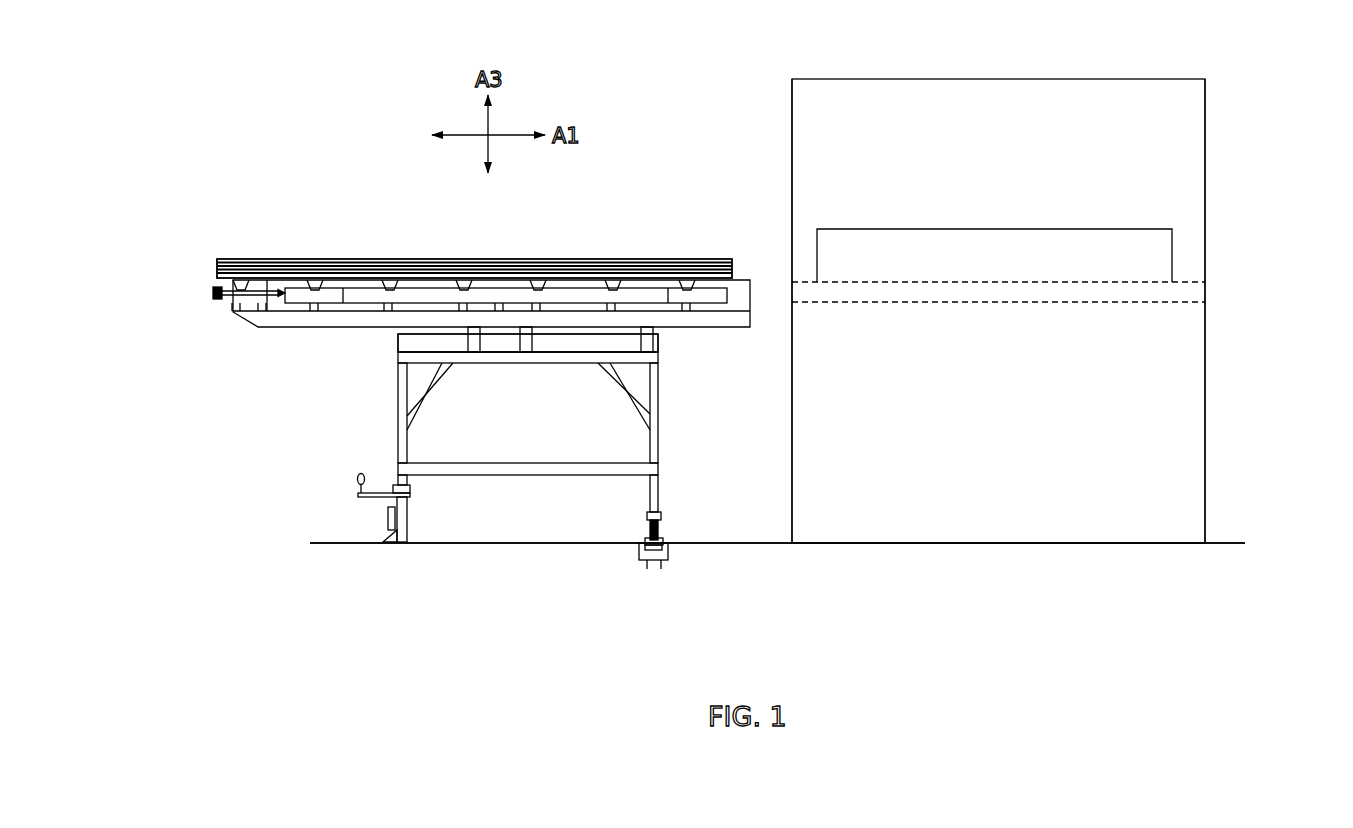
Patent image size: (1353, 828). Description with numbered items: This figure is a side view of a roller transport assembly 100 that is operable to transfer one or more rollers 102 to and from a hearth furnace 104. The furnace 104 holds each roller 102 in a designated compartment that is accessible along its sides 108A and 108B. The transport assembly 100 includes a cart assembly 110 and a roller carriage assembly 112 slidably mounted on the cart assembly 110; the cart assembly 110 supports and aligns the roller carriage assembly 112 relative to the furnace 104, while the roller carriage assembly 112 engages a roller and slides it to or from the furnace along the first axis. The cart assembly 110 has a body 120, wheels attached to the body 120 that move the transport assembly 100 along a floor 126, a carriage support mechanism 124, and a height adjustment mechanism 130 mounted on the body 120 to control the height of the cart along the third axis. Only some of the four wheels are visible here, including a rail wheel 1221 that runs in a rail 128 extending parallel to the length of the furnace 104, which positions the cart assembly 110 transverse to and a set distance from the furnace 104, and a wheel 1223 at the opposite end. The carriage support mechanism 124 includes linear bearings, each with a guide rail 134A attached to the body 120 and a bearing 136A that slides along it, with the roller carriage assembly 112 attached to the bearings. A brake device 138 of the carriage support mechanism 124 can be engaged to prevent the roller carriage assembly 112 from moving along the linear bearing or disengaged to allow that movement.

The roller transport assembly 100 is at (298, 154).
The roller 102 is at (1180, 302).
The hearth furnace 104 is at (920, 78).
The side of the furnace 108A is at (792, 135).
The side of the furnace 108B is at (1205, 150).
The cart assembly 110 is at (672, 400).
The roller carriage assembly 112 is at (212, 267).
The body 120 is at (658, 445).
The rail wheel 1221 is at (648, 530).
The wheel 1223 is at (408, 503).
The carriage support mechanism 124 is at (395, 345).
The floor 126 is at (478, 543).
The rail 128 is at (673, 560).
The height adjustment mechanism 130 is at (382, 492).
The guide rail 134A is at (598, 343).
The bearing 136A is at (650, 340).
The brake device 138 is at (527, 342).